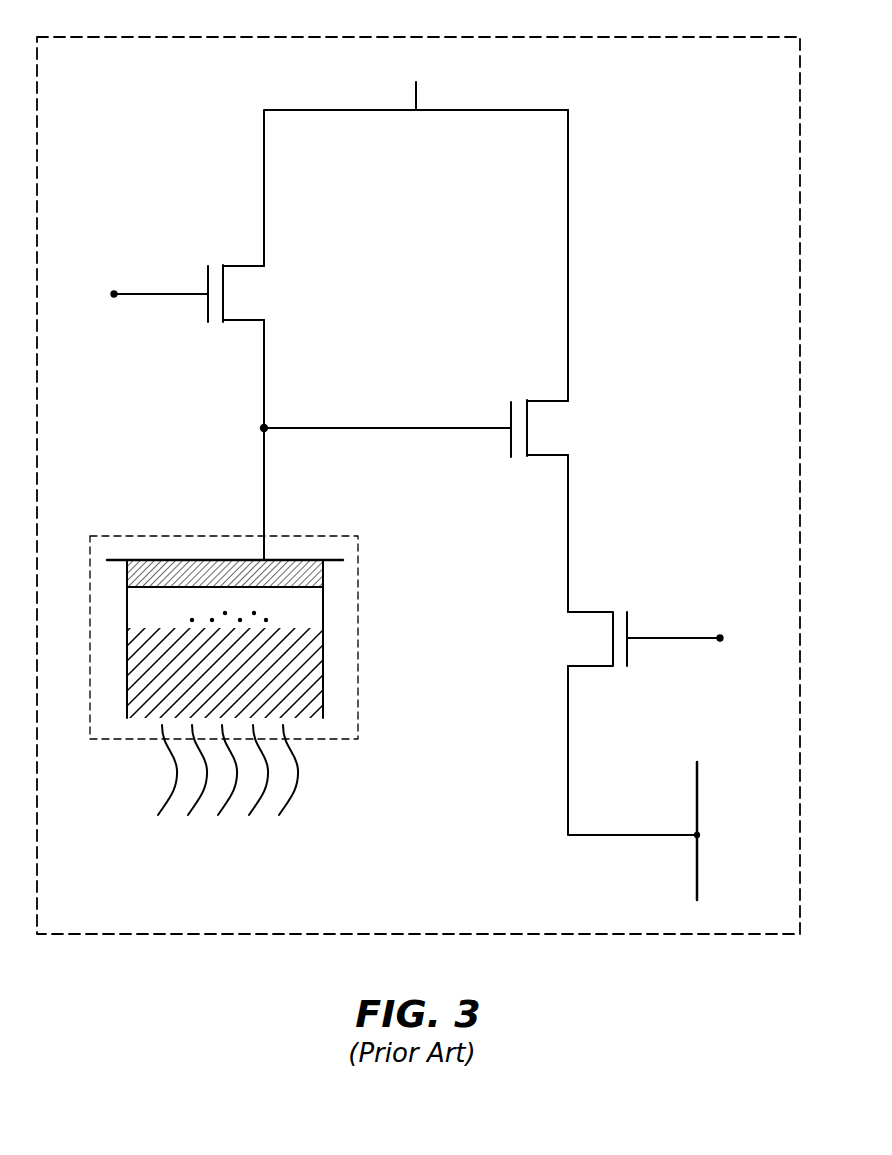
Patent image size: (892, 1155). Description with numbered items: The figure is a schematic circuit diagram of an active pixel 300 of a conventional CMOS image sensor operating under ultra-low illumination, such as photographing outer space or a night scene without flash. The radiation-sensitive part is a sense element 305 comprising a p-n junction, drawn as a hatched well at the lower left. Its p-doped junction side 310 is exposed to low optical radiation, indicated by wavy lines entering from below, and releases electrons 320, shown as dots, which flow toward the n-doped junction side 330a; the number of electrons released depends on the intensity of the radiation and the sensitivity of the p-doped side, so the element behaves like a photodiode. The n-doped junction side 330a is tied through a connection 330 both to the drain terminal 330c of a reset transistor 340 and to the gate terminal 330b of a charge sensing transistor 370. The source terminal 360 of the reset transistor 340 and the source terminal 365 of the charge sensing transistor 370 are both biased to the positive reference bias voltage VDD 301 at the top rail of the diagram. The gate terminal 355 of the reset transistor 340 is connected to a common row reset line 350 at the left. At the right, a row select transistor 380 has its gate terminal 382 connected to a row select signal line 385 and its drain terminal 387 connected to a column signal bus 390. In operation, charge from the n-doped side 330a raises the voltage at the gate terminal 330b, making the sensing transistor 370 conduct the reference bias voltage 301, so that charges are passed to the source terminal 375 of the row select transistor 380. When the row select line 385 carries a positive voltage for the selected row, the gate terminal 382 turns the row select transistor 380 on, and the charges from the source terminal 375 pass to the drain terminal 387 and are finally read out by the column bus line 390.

The active pixel 300 is at (436, 923).
The positive reference bias voltage VDD 301 is at (416, 110).
The sense element 305 is at (145, 818).
The p-doped junction side 310 is at (323, 697).
The electrons 320 is at (265, 605).
The connection 330 is at (266, 430).
The n-doped junction side 330a is at (270, 555).
The gate terminal 330b is at (507, 432).
The drain terminal 330c is at (264, 380).
The reset transistor 340 is at (250, 298).
The common row reset line 350 is at (114, 294).
The gate terminal 355 is at (160, 294).
The source terminal 360 is at (264, 205).
The source terminal 365 is at (568, 255).
The charge sensing transistor 370 is at (572, 430).
The source terminal 375 is at (568, 541).
The row select transistor 380 is at (584, 638).
The gate terminal 382 is at (676, 640).
The row select signal line 385 is at (720, 638).
The drain terminal 387 is at (568, 752).
The column signal bus 390 is at (697, 848).